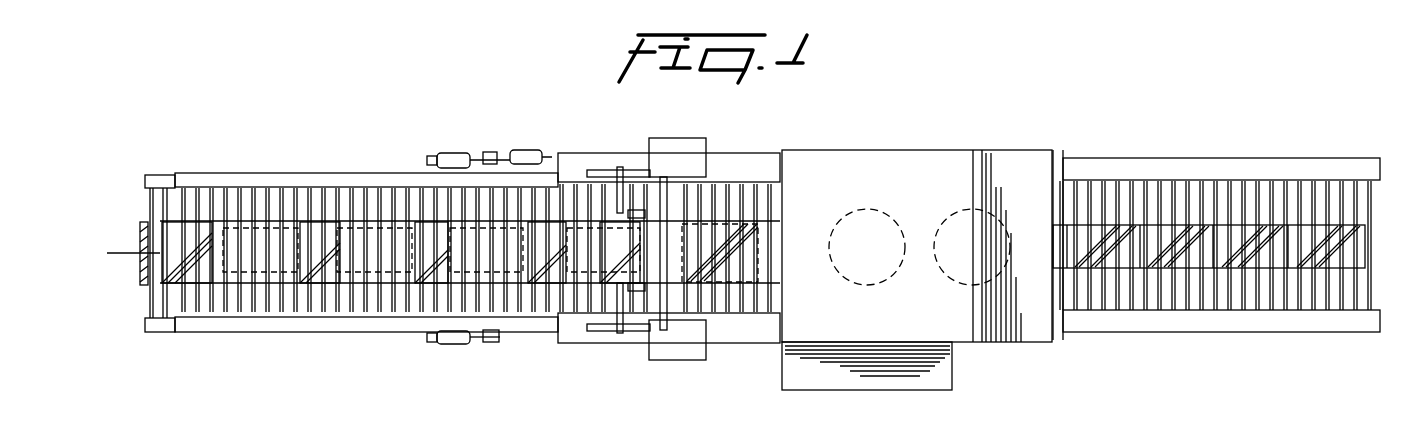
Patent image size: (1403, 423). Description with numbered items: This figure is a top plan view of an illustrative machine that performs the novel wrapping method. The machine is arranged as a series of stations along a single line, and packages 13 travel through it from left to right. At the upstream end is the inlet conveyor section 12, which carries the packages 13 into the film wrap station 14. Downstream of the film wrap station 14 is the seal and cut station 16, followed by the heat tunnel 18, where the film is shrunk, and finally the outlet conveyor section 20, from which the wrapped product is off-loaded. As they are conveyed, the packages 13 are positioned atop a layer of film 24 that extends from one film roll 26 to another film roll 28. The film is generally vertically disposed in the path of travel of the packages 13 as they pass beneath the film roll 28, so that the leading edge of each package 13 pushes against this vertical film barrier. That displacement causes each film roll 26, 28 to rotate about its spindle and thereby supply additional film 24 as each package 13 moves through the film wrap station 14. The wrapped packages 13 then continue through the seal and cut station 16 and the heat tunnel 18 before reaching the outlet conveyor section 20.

The inlet conveyor section 12 is at (278, 338).
The packages 13 is at (272, 235).
The film wrap station 14 is at (573, 142).
The seal and cut station 16 is at (689, 133).
The heat tunnel 18 is at (890, 142).
The outlet conveyor section 20 is at (1201, 151).
The layer of film 24 is at (212, 224).
The film roll 26 is at (140, 267).
The film roll 28 is at (605, 263).